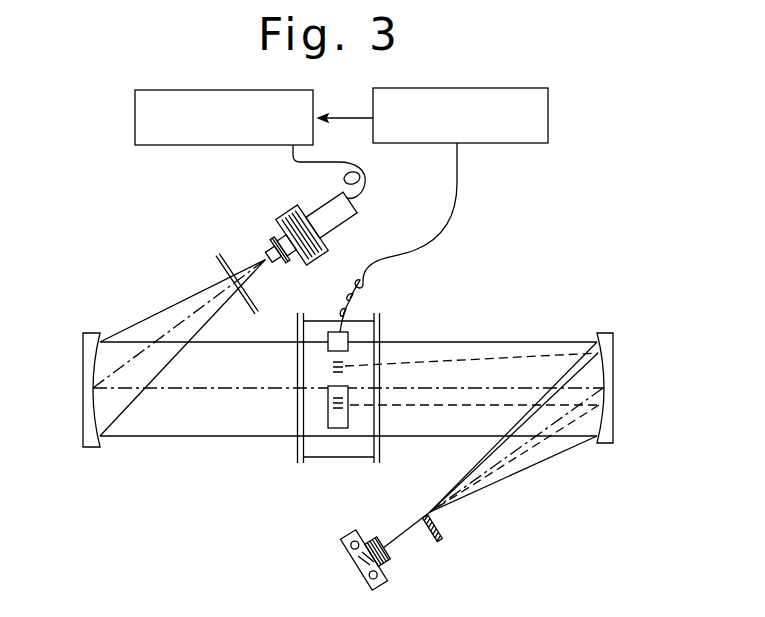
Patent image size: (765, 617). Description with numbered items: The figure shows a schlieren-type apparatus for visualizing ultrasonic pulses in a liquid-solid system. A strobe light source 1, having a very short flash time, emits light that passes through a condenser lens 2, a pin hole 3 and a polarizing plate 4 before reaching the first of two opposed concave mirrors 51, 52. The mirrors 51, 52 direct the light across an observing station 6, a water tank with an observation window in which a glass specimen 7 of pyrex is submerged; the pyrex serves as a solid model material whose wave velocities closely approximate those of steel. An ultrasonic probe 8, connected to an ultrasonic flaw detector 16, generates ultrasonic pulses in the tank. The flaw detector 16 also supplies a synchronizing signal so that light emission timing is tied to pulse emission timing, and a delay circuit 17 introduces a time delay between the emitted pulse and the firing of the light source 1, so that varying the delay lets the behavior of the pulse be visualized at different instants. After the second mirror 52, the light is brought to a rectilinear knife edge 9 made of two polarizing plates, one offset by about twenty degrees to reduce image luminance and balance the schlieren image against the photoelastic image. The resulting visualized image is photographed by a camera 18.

The strobe light source 1 is at (336, 197).
The condenser lens 2 is at (291, 207).
The pin hole 3 is at (268, 239).
The polarizing plate 4 is at (233, 258).
The concave mirror 51 is at (100, 333).
The concave mirror 52 is at (612, 332).
The observing station 6 is at (352, 458).
The glass specimen 7 is at (328, 405).
The ultrasonic probe 8 is at (333, 330).
The knife edge 9 is at (441, 532).
The ultrasonic flaw detector 16 is at (513, 145).
The delay circuit 17 is at (157, 145).
The camera 18 is at (390, 573).